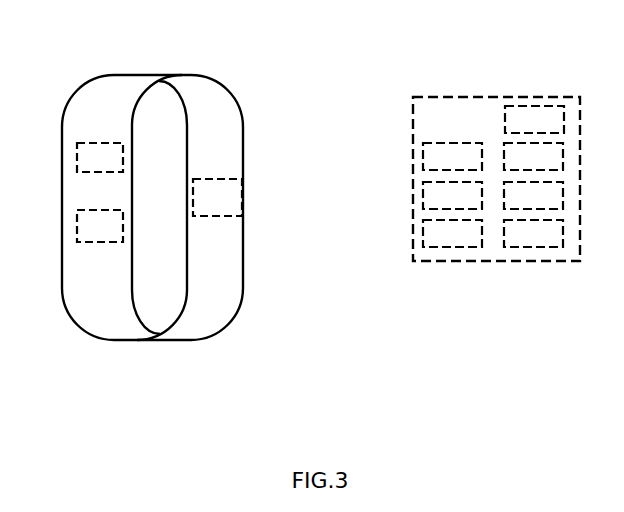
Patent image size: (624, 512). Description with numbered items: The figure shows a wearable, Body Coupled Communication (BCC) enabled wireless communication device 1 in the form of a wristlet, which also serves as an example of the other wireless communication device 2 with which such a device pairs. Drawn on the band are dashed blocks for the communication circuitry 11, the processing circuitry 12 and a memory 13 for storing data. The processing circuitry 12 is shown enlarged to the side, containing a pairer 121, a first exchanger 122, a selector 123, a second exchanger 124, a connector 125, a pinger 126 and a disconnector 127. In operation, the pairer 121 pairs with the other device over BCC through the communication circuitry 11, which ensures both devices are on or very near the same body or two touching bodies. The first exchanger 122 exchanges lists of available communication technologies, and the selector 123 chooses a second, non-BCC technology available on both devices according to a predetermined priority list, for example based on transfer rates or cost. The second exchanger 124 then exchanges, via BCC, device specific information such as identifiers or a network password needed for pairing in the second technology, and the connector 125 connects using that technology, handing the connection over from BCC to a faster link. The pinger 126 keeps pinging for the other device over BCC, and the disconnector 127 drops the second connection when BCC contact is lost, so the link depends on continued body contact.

The wireless communication device 1 is at (135, 170).
The other wireless communication device 2 is at (135, 50).
The communication circuitry 11 is at (100, 157).
The processing circuitry 12 is at (413, 97).
The memory 13 is at (100, 226).
The pairer 121 is at (534, 119).
The first exchanger 122 is at (452, 156).
The selector 123 is at (533, 156).
The second exchanger 124 is at (452, 195).
The connector 125 is at (533, 195).
The pinger 126 is at (452, 233).
The disconnector 127 is at (533, 233).